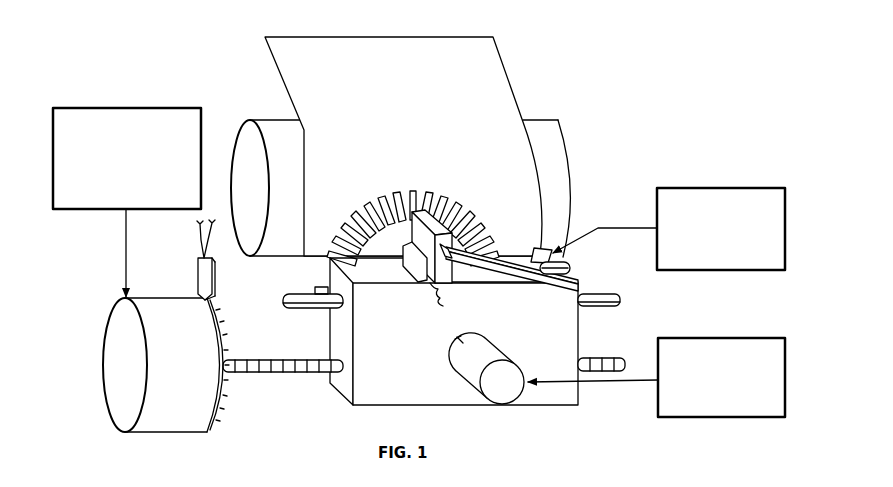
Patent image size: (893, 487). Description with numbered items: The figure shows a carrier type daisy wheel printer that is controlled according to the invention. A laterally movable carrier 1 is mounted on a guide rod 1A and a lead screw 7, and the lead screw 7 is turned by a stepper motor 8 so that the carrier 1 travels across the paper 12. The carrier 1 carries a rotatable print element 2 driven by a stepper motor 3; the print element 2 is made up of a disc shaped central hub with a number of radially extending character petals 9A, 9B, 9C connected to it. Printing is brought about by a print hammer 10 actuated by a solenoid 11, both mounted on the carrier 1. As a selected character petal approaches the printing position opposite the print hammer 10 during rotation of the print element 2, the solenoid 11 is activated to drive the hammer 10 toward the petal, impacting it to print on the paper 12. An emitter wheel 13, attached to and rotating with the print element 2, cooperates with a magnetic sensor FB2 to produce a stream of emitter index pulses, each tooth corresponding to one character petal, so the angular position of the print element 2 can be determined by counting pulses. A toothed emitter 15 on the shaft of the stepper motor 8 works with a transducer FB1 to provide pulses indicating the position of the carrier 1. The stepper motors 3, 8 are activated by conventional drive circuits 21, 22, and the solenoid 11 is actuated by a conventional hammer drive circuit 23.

The carrier 1 is at (398, 390).
The guide rod 1A is at (298, 294).
The print element 2 is at (488, 212).
The stepper motor 3 is at (468, 367).
The lead screw 7 is at (260, 374).
The stepper motor 8 is at (162, 430).
The character petal 9A is at (465, 203).
The character petal 9B is at (445, 194).
The character petal 9C is at (412, 192).
The print hammer 10 is at (500, 272).
The solenoid 11 is at (571, 254).
The paper 12 is at (393, 100).
The emitter wheel 13 is at (386, 260).
The toothed emitter 15 is at (228, 398).
The drive circuit 21 is at (131, 112).
The drive circuit 22 is at (732, 340).
The hammer drive circuit 23 is at (728, 196).
The transducer FB1 is at (198, 273).
The magnetic sensor FB2 is at (412, 263).